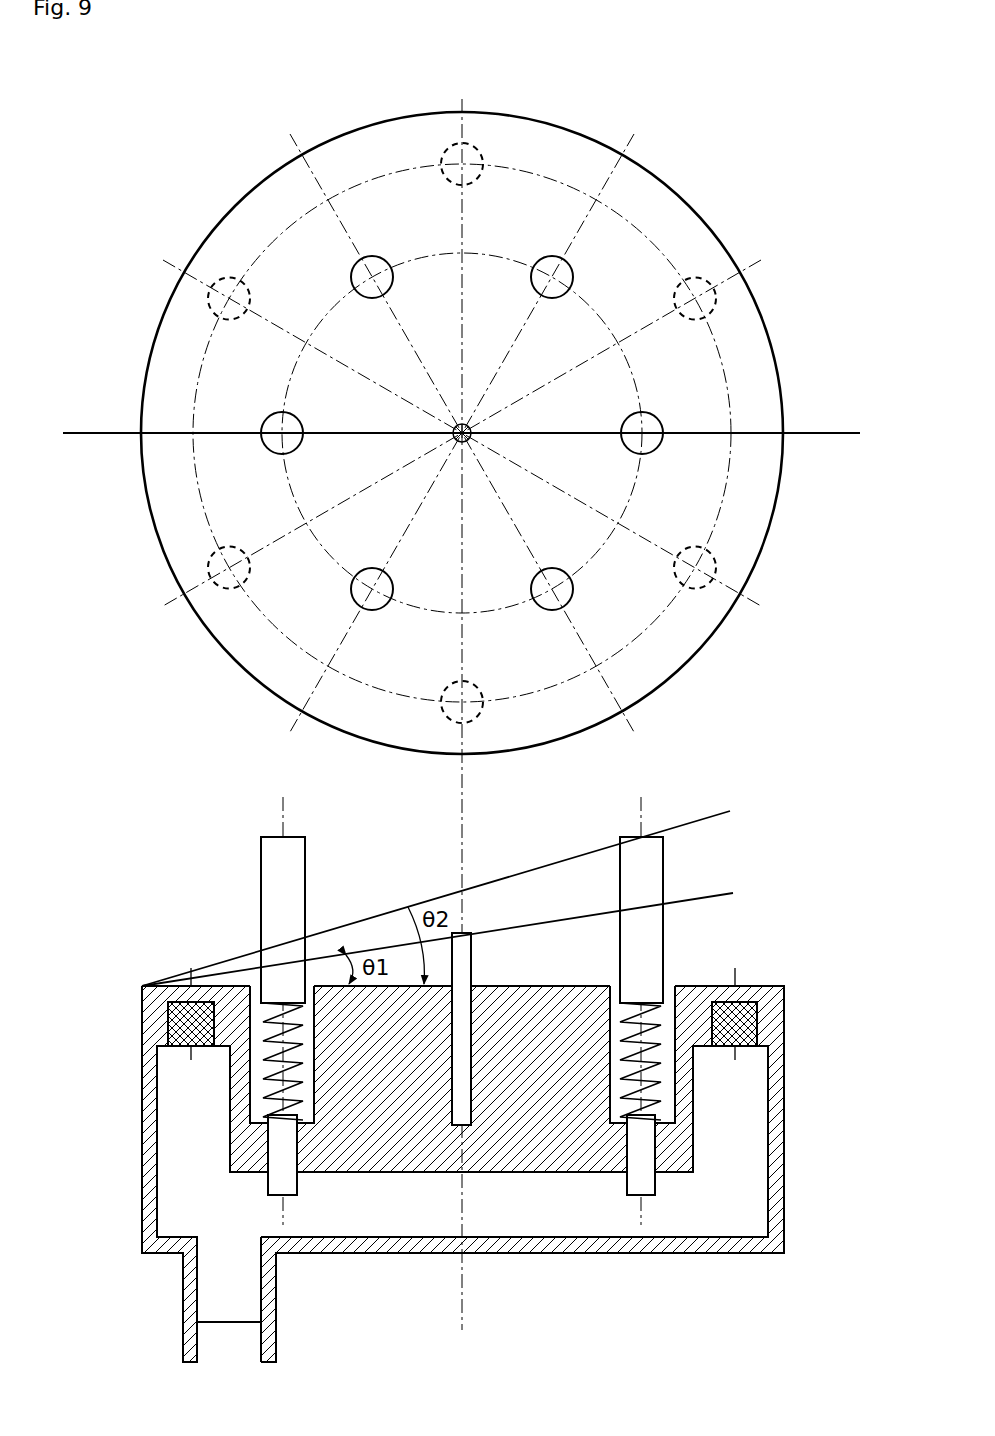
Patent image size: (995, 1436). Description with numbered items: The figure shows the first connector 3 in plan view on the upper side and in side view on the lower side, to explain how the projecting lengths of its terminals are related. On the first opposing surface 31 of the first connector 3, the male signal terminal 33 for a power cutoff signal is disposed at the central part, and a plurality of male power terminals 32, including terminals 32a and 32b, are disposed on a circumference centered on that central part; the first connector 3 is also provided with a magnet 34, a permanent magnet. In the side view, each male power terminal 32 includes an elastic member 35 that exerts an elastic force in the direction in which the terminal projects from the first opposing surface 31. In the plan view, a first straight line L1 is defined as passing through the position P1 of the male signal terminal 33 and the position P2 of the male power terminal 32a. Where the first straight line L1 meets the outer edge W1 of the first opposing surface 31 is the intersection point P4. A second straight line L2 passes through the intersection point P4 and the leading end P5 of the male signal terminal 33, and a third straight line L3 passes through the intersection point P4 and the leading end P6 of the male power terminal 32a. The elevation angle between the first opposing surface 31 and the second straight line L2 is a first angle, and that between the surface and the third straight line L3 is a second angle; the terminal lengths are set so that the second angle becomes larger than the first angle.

The first connector 3 is at (594, 95).
The first opposing surface 31 is at (508, 150).
The male power terminals 32 is at (462, 433).
The male power terminal 32a is at (643, 420).
The male power terminal 32b is at (283, 416).
The male signal terminal 33 is at (464, 426).
The magnet 34 is at (450, 140).
The elastic member 35 is at (655, 1087).
The position of the male signal terminal P1 is at (470, 448).
The position of the male power terminal P2 is at (644, 455).
The intersection point P4 is at (140, 430).
The leading end of the male signal terminal P5 is at (470, 935).
The leading end of the male power terminal P6 is at (650, 838).
The first straight line L1 is at (828, 432).
The second straight line L2 is at (733, 893).
The third straight line L3 is at (730, 810).
The outer edge of the first opposing surface W1 is at (143, 485).